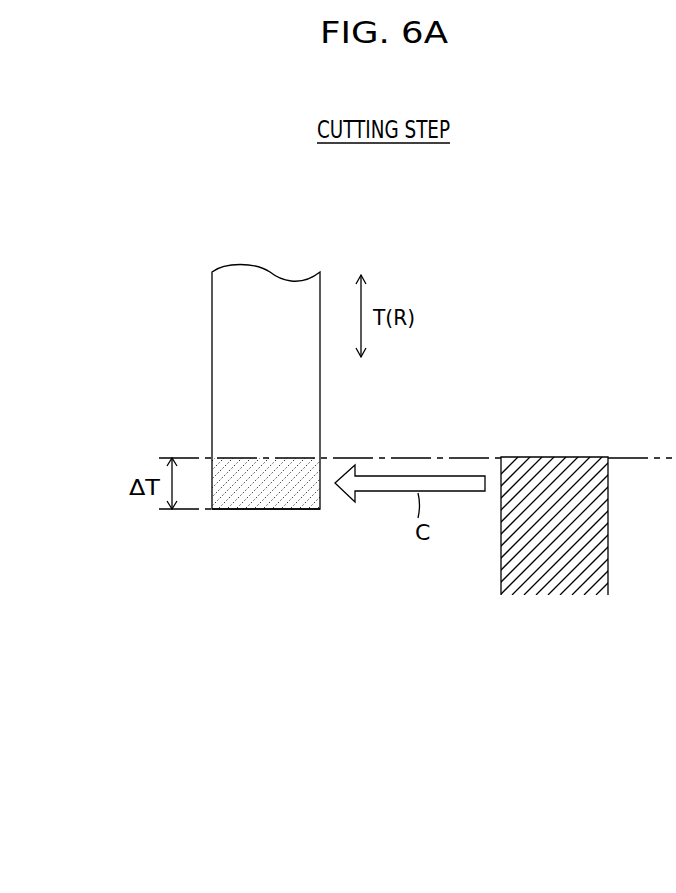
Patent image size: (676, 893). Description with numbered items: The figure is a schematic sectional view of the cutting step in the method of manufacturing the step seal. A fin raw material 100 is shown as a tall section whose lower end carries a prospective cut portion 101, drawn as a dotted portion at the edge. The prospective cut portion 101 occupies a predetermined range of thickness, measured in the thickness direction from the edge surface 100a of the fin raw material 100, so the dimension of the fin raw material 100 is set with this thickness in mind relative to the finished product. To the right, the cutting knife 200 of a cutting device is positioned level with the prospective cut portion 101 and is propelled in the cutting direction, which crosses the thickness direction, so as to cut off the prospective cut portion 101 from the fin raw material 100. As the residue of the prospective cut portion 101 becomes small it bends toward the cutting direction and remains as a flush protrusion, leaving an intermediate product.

The fin raw material 100 is at (202, 310).
The edge surface 100a is at (233, 510).
The prospective cut portion 101 is at (297, 497).
The cutting knife 200 is at (608, 565).